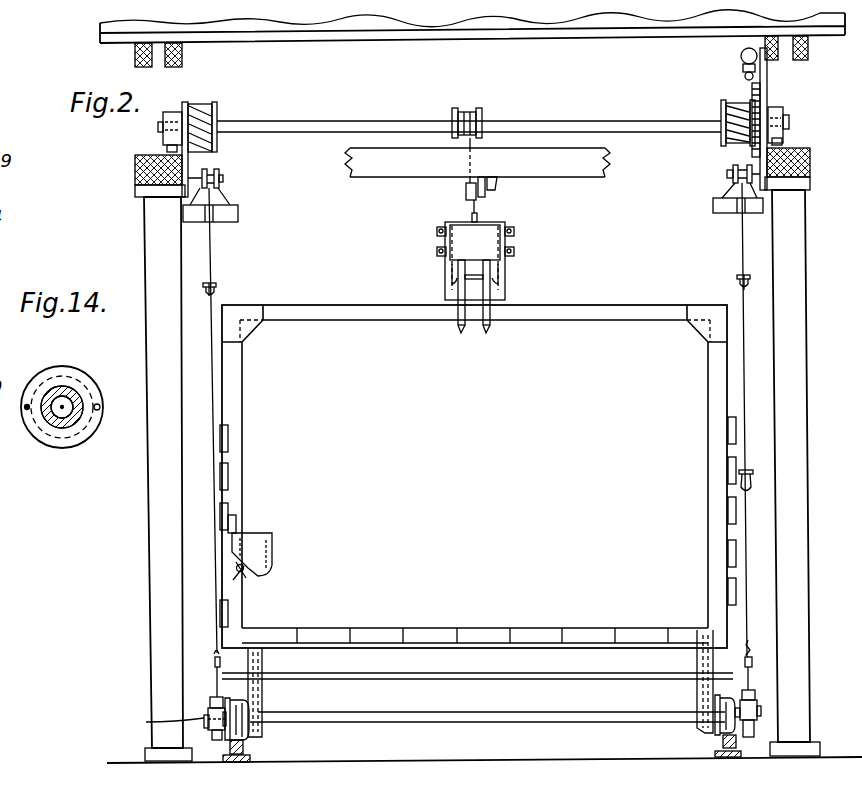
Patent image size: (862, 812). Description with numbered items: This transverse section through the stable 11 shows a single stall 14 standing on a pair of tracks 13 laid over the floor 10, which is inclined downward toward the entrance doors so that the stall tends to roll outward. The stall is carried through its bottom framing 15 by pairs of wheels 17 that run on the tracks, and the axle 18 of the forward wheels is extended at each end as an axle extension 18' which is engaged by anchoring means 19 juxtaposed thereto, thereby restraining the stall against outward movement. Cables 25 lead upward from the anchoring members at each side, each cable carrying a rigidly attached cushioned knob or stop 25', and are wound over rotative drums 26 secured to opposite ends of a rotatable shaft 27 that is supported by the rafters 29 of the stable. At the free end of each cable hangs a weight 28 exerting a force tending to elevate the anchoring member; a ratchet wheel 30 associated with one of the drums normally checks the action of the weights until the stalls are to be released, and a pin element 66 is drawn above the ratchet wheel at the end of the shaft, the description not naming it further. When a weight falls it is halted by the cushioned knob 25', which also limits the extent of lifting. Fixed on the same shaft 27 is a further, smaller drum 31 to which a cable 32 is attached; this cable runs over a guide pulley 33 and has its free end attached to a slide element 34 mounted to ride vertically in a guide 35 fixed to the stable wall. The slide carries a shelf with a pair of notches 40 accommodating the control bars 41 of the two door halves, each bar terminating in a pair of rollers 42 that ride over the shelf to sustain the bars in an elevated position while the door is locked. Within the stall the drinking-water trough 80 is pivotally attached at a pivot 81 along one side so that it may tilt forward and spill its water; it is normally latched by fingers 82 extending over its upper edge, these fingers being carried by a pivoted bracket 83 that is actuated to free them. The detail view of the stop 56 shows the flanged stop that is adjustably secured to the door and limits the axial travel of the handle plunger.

In FIG. 2, the floor 10 is at (456, 761).
In FIG. 2, the stable 11 is at (146, 624).
In FIG. 2, the tracks 13 is at (245, 753).
In FIG. 2, the stall 14 is at (312, 305).
In FIG. 2, the bottom framing 15 is at (438, 673).
In FIG. 2, the wheels 17 is at (718, 700).
In FIG. 2, the axle 18 is at (487, 728).
In FIG. 2, the axle extension 18' is at (485, 714).
In FIG. 2, the anchoring means 19 is at (208, 696).
In FIG. 2, the cables 25 is at (478, 419).
In FIG. 2, the cushioned knob or stop 25' is at (476, 279).
In FIG. 2, the rotative drums 26 is at (198, 107).
In FIG. 2, the rotatable shaft 27 is at (580, 120).
In FIG. 2, the weight 28 is at (225, 221).
In FIG. 2, the rafters 29 is at (145, 162).
In FIG. 2, the ratchet wheel 30 is at (748, 88).
In FIG. 2, the smaller drum 31 is at (477, 108).
In FIG. 2, the cable 32 is at (475, 145).
In FIG. 2, the guide pulley 33 is at (466, 190).
In FIG. 2, the slide element 34 is at (492, 222).
In FIG. 2, the guide 35 is at (500, 252).
In FIG. 2, the notches 40 is at (457, 290).
In FIG. 2, the control bars 41 is at (486, 333).
In FIG. 2, the rollers 42 is at (452, 270).
In FIG. 14, the stop 56 is at (78, 433).
In FIG. 2, the pin 66 is at (742, 70).
In FIG. 2, the drinking-water trough 80 is at (270, 542).
In FIG. 2, the pivot 81 is at (244, 570).
In FIG. 2, the fingers 82 is at (236, 528).
In FIG. 2, the pivoted bracket 83 is at (243, 574).